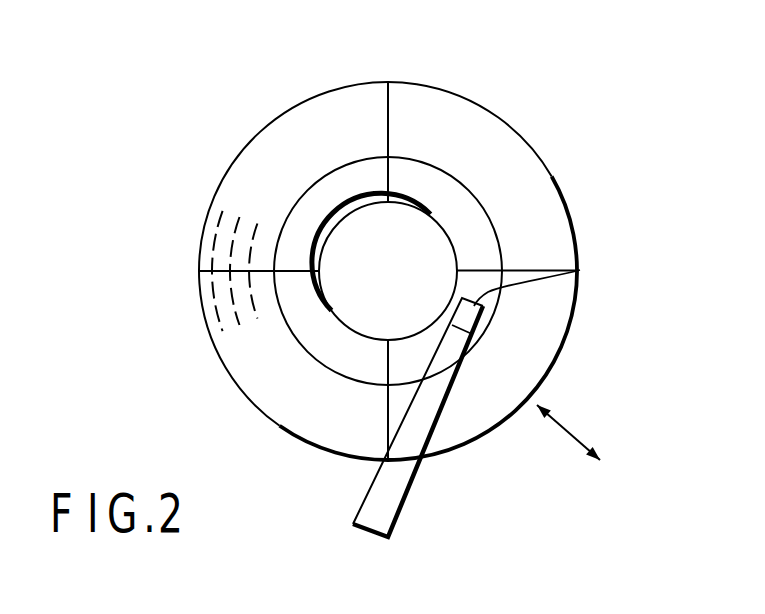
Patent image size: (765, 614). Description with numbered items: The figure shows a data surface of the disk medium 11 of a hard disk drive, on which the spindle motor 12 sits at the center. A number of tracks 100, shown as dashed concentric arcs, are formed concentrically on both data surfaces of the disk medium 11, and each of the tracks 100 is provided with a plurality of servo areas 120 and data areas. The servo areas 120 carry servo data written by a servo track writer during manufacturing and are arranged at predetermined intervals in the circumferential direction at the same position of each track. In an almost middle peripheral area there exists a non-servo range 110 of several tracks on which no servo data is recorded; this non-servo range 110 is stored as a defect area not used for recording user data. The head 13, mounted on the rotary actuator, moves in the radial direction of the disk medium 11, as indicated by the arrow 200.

The disk medium 11 is at (522, 138).
The spindle motor 12 is at (417, 258).
The head 13 is at (578, 270).
The tracks 100 is at (220, 318).
The non-servo range 110 is at (328, 367).
The servo areas 120 is at (390, 93).
The arrow 200 is at (572, 433).